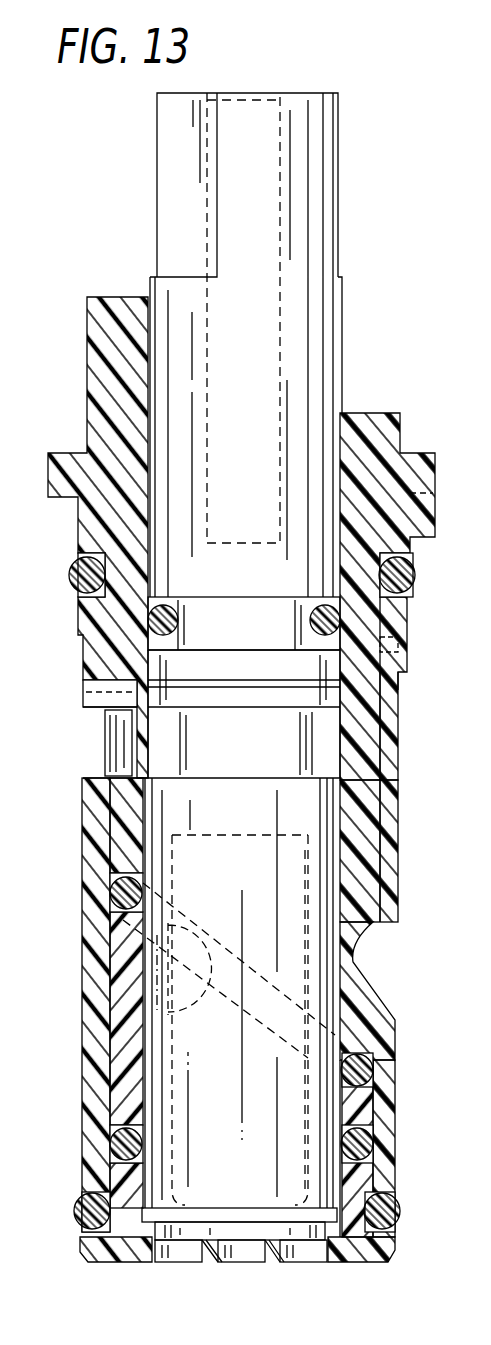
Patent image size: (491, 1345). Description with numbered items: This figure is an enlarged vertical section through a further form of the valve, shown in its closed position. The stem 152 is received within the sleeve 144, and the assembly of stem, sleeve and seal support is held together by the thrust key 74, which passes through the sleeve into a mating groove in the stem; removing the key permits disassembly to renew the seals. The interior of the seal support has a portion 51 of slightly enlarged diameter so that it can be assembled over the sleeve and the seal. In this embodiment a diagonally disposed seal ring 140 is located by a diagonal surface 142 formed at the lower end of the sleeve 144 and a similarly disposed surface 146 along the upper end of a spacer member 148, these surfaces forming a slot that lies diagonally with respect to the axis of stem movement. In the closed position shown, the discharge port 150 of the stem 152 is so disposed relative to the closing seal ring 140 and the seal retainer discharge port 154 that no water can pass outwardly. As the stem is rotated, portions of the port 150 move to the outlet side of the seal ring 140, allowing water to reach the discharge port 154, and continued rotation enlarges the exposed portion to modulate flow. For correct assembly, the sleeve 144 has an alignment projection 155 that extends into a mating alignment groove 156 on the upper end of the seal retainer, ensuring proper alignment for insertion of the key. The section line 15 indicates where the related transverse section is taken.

The section line 15- 15 is at (435, 747).
The portion of slightly enlarged interior diameter 51 is at (373, 802).
The thrust key 74 is at (80, 769).
The seal ring 140 is at (143, 883).
The diagonal surface 142 is at (110, 893).
The sleeve 144 is at (368, 890).
The surface 146 is at (360, 1087).
The spacer member 148 is at (122, 1070).
The discharge port 150 is at (168, 1018).
The stem 152 is at (318, 393).
The seal retainer discharge port 154 is at (365, 988).
The alignment projection 155 is at (403, 645).
The alignment groove 156 is at (402, 647).